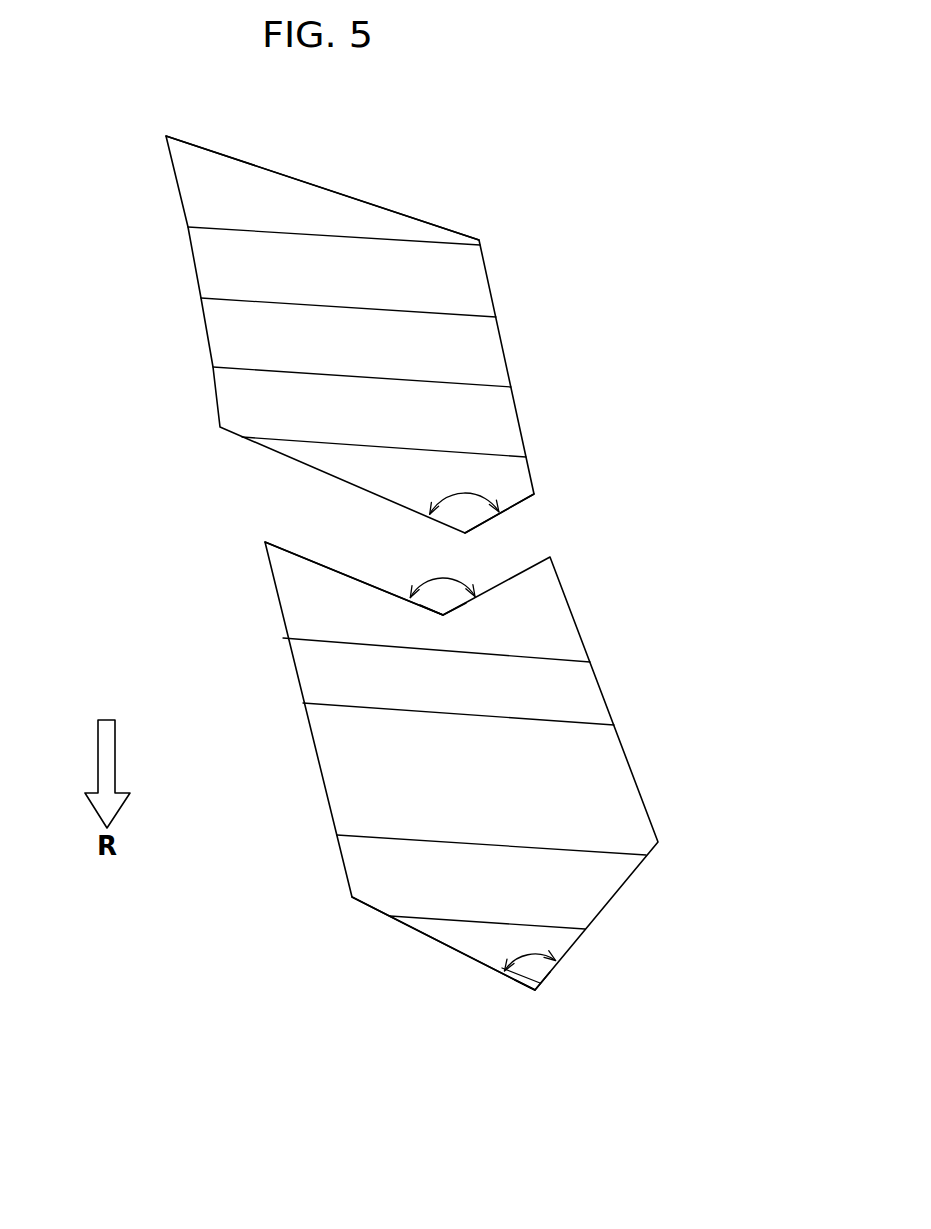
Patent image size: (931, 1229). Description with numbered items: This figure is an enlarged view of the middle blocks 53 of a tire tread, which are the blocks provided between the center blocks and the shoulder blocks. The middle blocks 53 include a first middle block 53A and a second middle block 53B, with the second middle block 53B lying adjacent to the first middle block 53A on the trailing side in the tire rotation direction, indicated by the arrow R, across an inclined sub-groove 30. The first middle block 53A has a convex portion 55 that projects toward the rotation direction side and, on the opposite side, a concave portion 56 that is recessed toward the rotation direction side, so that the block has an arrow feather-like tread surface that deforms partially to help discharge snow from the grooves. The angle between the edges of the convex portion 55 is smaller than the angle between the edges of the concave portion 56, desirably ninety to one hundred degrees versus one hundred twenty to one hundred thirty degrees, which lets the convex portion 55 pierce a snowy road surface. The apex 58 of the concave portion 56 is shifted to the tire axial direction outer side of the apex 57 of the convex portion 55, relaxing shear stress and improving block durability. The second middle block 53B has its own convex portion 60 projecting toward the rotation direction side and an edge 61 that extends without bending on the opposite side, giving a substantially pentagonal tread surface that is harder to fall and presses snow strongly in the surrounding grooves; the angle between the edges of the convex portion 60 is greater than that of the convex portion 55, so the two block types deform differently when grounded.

The inclined sub-groove 30 is at (347, 533).
The middle block 53 is at (362, 348).
The first middle block 53A is at (435, 781).
The second middle block 53B is at (413, 323).
The convex portion 55 is at (488, 935).
The concave portion 56 is at (397, 578).
The apex of the convex portion 57 is at (537, 991).
The apex of the concave portion 58 is at (443, 602).
The convex portion 60 is at (458, 473).
The edge 61 is at (333, 188).